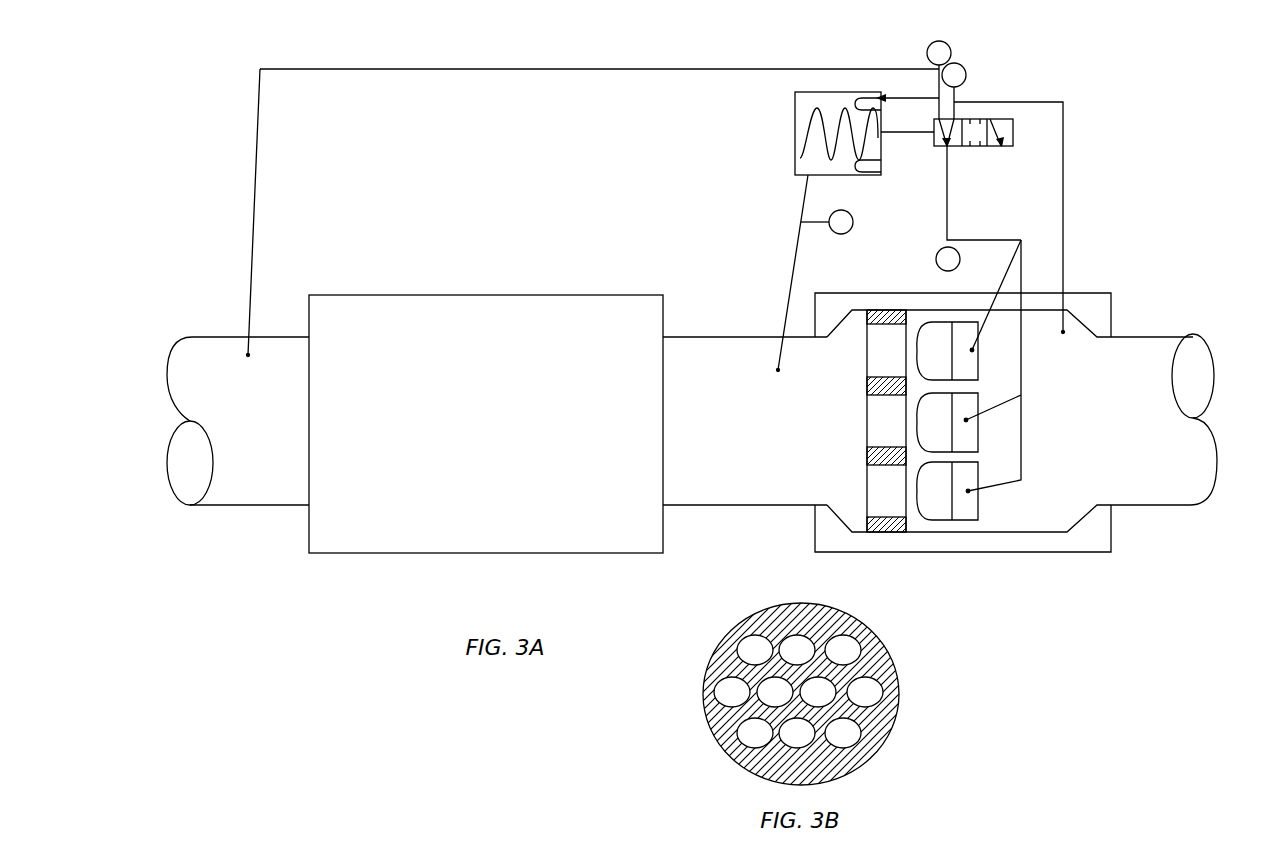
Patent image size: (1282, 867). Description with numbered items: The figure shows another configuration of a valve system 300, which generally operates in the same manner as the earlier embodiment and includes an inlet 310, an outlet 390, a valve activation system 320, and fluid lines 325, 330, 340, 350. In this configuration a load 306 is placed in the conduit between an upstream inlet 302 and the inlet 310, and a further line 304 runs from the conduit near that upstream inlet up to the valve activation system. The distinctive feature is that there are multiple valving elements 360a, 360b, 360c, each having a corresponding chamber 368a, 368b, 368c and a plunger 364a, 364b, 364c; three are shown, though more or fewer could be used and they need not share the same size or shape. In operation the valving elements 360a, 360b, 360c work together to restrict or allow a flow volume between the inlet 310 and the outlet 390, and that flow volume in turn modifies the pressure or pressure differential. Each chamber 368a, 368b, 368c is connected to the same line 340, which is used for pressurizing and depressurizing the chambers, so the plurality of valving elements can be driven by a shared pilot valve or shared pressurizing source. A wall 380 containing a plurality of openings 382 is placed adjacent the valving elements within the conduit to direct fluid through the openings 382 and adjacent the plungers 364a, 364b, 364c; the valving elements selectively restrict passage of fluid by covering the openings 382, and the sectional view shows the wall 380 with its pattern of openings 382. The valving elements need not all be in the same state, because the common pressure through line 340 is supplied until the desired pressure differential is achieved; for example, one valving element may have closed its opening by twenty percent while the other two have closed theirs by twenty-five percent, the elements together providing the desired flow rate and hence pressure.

In FIG. 3A, the valve system 300 is at (1140, 103).
In FIG. 3A, the inlet 302 is at (167, 515).
In FIG. 3A, the pressure sensing line 304 is at (257, 200).
In FIG. 3A, the load 306 is at (487, 518).
In FIG. 3A, the inlet 310 is at (751, 486).
In FIG. 3A, the valve activation system 320 is at (1026, 85).
In FIG. 3A, the fluid line 325 is at (673, 67).
In FIG. 3A, the fluid line 330 is at (796, 198).
In FIG. 3A, the line 340 is at (950, 213).
In FIG. 3A, the fluid line 350 is at (1063, 230).
In FIG. 3A, the valving element 360a is at (1013, 311).
In FIG. 3A, the valving element 360b is at (1018, 422).
In FIG. 3A, the valving element 360c is at (1013, 380).
In FIG. 3A, the plunger 364a is at (947, 351).
In FIG. 3A, the plunger 364b is at (947, 422).
In FIG. 3A, the plunger 364c is at (947, 491).
In FIG. 3A, the chamber 368a is at (967, 367).
In FIG. 3A, the chamber 368b is at (967, 443).
In FIG. 3A, the chamber 368c is at (967, 515).
In FIG. 3A, the wall 380 is at (867, 309).
In FIG. 3B, the wall 380 is at (888, 660).
In FIG. 3A, the openings 382 is at (867, 360).
In FIG. 3B, the openings 382 is at (872, 691).
In FIG. 3A, the outlet 390 is at (1226, 499).